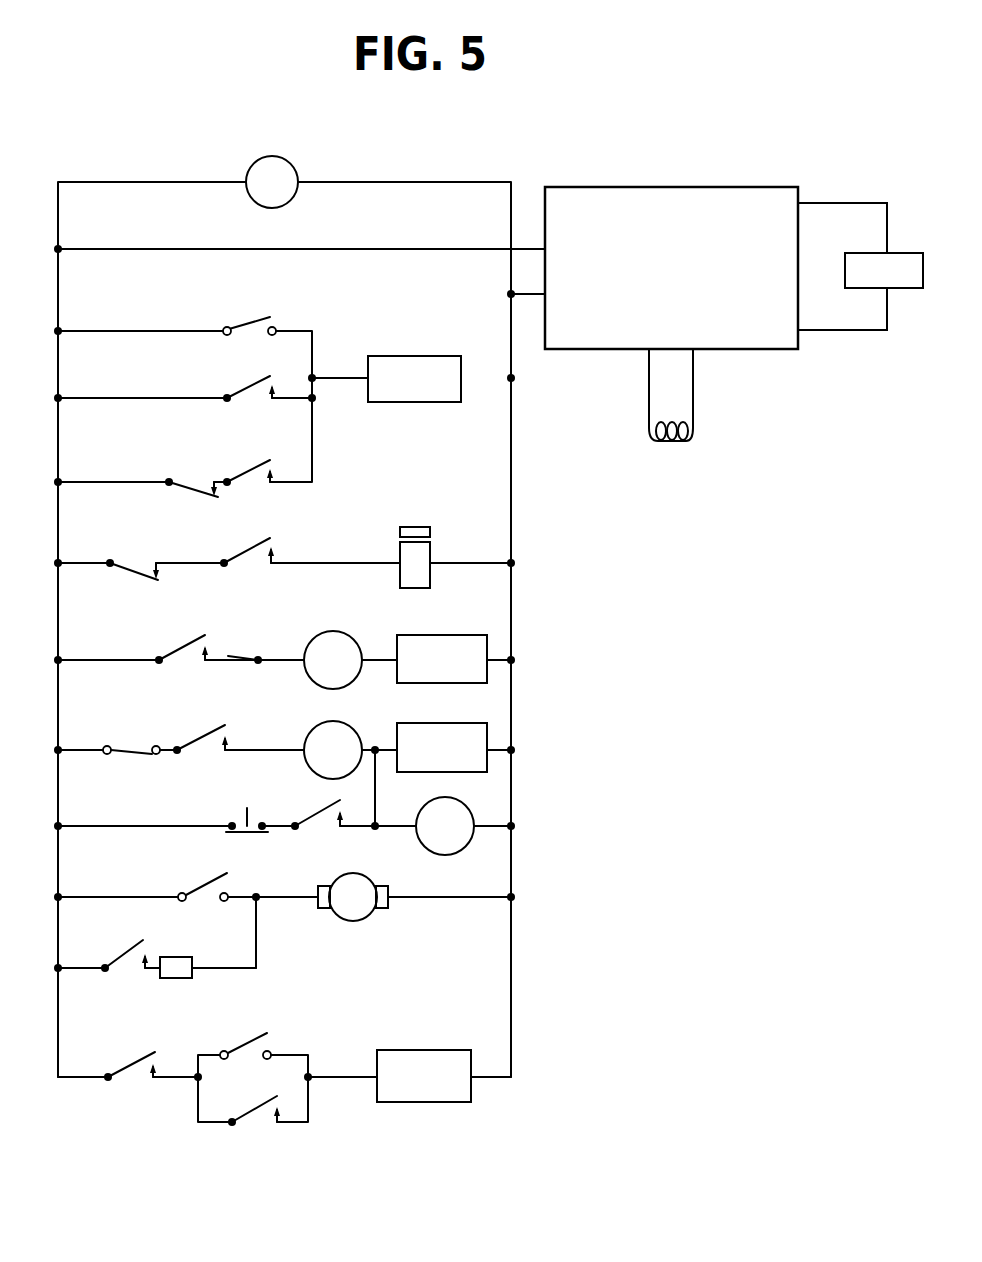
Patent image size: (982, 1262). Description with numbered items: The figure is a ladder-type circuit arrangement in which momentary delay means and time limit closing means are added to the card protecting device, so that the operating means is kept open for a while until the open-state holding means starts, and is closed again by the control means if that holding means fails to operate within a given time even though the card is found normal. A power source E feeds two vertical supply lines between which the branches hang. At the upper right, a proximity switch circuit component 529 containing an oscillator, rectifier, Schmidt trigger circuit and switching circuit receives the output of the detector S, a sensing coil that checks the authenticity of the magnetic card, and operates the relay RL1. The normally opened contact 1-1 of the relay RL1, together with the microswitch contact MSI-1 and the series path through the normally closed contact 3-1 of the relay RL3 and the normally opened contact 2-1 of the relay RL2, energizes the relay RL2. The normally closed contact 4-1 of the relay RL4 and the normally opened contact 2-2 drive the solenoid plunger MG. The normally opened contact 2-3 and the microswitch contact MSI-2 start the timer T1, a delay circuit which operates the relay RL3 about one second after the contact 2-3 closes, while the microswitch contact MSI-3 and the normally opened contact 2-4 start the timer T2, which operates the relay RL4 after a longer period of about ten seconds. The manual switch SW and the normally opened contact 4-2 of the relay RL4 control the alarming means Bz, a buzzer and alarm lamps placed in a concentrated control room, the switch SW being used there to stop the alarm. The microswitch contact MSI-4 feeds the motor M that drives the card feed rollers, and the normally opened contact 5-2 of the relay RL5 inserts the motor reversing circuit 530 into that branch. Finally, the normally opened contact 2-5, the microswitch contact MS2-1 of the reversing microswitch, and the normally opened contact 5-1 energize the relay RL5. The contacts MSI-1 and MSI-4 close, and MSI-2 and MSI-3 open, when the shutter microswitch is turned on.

The proximity switch circuit component 529 is at (688, 187).
The motor reversing circuit 530 is at (179, 957).
The power source E is at (272, 182).
The detector S is at (671, 412).
The relay RL1 is at (884, 270).
The relay RL2 is at (414, 379).
The relay RL3 is at (442, 659).
The relay RL4 is at (442, 747).
The relay RL5 is at (424, 1076).
The microswitch contact MS1-1 MSI-1 is at (252, 311).
The microswitch contact MS1-2 MSI-2 is at (250, 645).
The microswitch contact MS1-3 MSI-3 is at (121, 737).
The microswitch contact MS1-4 MSI-4 is at (184, 876).
The microswitch contact MS2-1 is at (262, 1030).
The normally opened contact of relay RL1 1-1 is at (245, 380).
The normally opened contact of relay RL2 2-1 is at (242, 463).
The normally opened contact of relay RL2 2-2 is at (239, 543).
The normally opened contact of relay RL2 2-3 is at (174, 645).
The normally opened contact of relay RL2 2-4 is at (195, 730).
The normally opened contact of relay RL2 2-5 is at (123, 1060).
The normally closed contact of relay RL3 3-1 is at (185, 474).
The normally closed contact of relay RL4 4-1 is at (129, 555).
The normally opened contact of relay RL4 4-2 is at (311, 807).
The normally opened contact of relay RL5 5-1 is at (251, 1101).
The normally opened contact of relay RL5 5-2 is at (113, 951).
The solenoid plunger MG is at (435, 557).
The timer T1 is at (333, 660).
The timer T2 is at (333, 750).
The manual switch SW is at (234, 813).
The alarming means Bz is at (445, 826).
The motor M is at (353, 897).